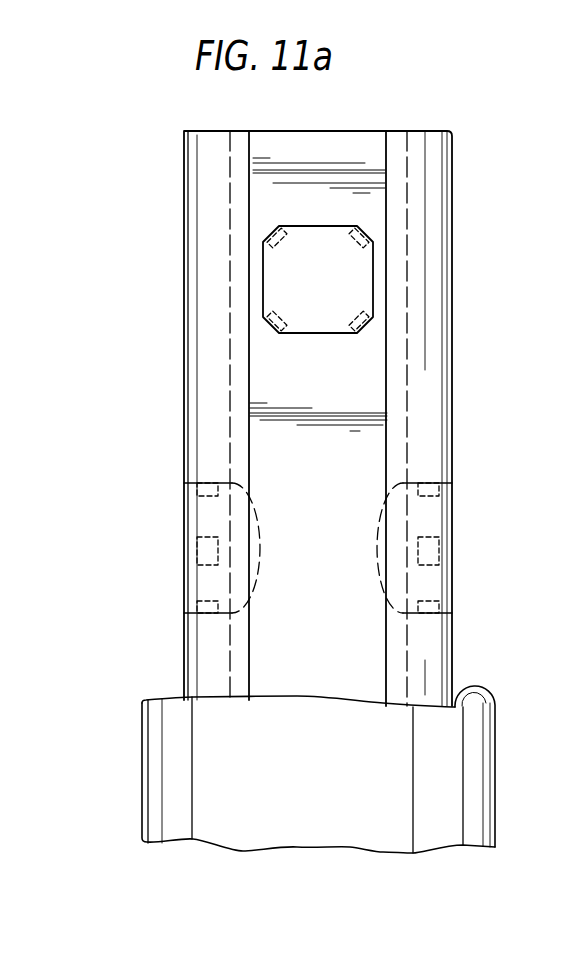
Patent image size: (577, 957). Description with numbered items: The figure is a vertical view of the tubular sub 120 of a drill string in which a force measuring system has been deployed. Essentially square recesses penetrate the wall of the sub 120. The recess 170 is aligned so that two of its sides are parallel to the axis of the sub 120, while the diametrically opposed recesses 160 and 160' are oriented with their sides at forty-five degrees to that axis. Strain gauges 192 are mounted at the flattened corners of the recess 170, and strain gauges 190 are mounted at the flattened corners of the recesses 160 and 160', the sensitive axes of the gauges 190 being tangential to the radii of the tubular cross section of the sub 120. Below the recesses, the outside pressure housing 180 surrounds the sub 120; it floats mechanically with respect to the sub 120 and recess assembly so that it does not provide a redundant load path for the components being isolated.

The tubular sub member 120 is at (206, 370).
The recess 170 is at (360, 282).
The strain gauge 192 is at (268, 238).
The recess 160' is at (181, 547).
The recess 160 is at (457, 548).
The strain gauge 190 is at (208, 484).
The outside pressure housing 180 is at (140, 768).